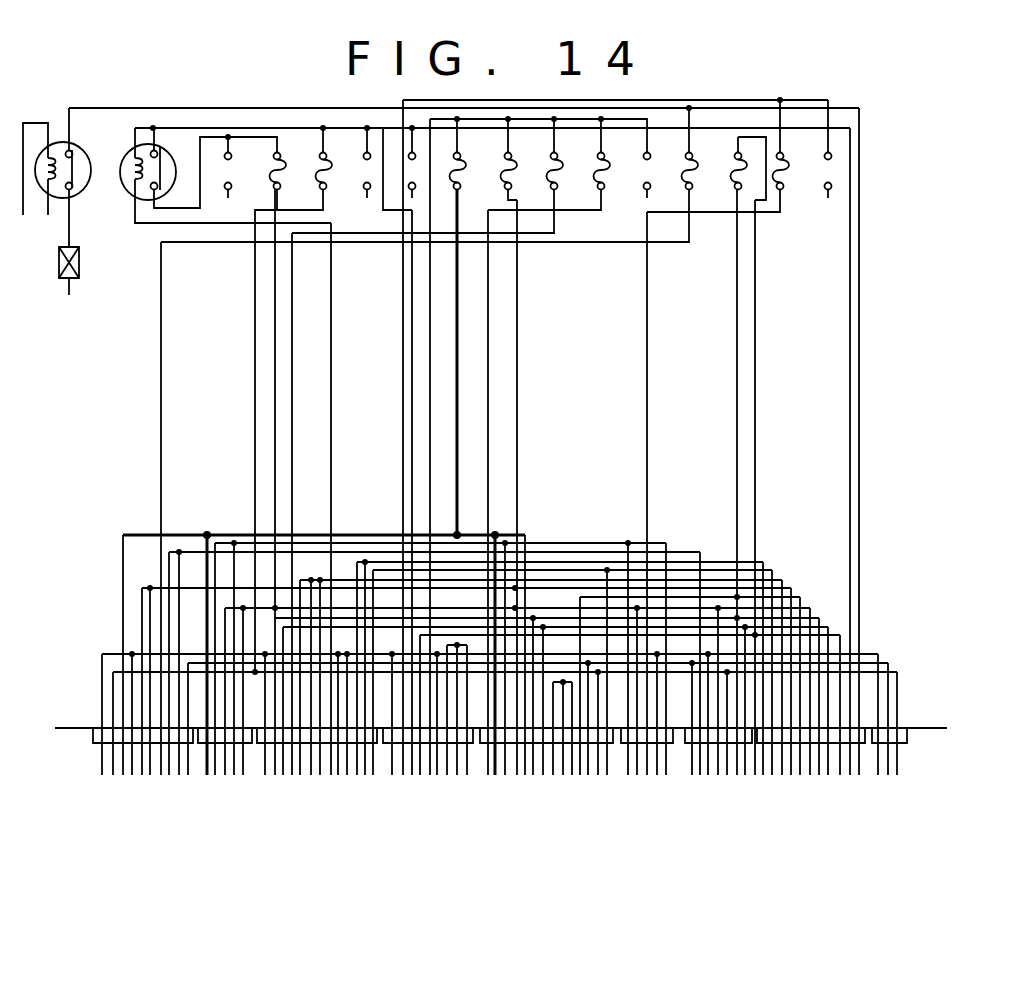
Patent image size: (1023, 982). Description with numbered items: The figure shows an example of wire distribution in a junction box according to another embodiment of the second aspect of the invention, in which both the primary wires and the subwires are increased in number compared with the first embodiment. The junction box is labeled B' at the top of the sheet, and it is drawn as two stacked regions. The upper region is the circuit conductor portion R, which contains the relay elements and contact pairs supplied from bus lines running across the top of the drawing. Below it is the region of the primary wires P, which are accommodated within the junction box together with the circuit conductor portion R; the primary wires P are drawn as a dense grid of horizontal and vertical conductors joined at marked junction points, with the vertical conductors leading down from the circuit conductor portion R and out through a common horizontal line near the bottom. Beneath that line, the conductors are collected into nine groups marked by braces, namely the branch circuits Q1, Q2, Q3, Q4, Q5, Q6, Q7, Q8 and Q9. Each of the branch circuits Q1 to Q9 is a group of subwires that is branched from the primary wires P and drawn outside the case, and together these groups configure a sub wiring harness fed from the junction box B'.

The power supply bus B' is at (541, 90).
The circuit conductor portion R is at (930, 257).
The primary wires P is at (931, 777).
The branch circuit Q1 is at (187, 816).
The branch circuit Q2 is at (252, 816).
The branch circuit Q3 is at (368, 816).
The branch circuit Q4 is at (465, 816).
The branch circuit Q5 is at (605, 816).
The branch circuit Q6 is at (668, 816).
The branch circuit Q7 is at (747, 816).
The branch circuit Q8 is at (757, 816).
The branch circuit Q9 is at (858, 816).